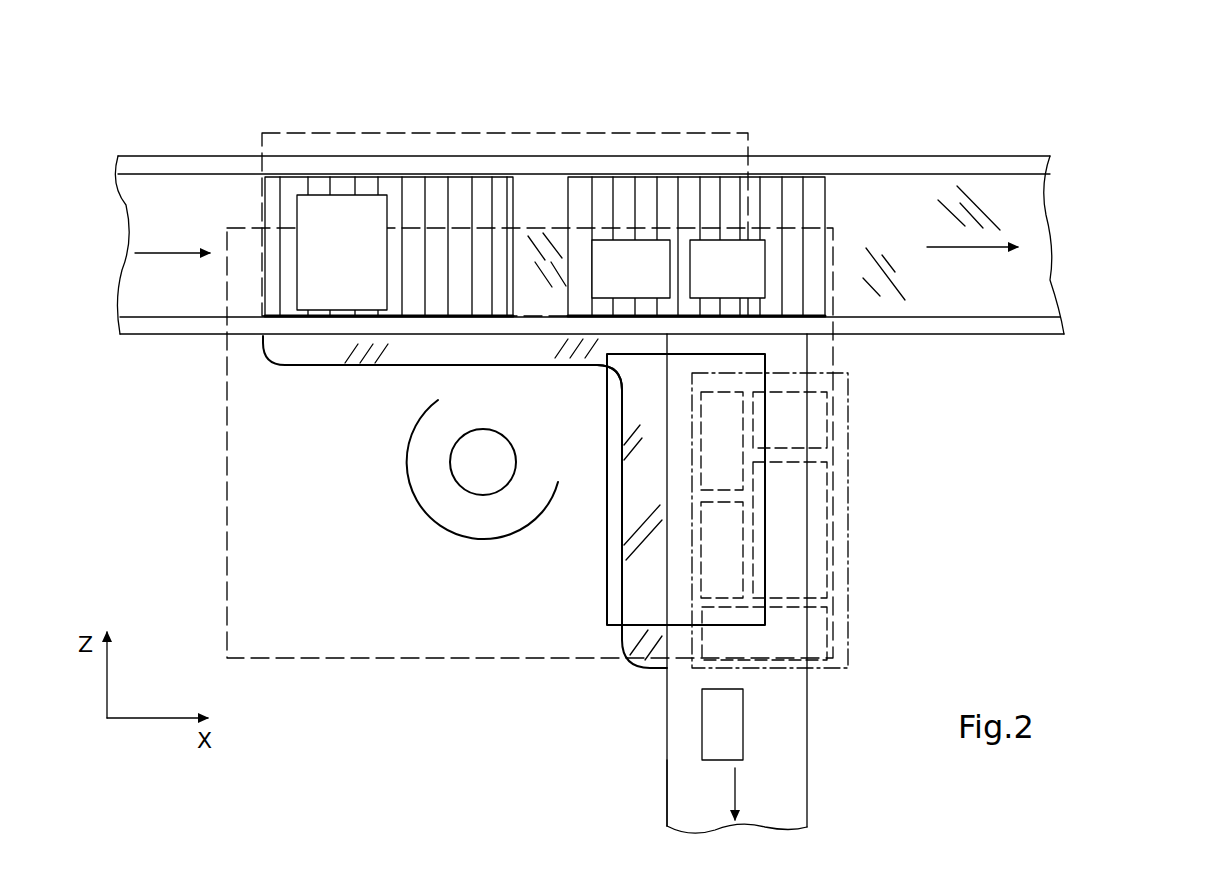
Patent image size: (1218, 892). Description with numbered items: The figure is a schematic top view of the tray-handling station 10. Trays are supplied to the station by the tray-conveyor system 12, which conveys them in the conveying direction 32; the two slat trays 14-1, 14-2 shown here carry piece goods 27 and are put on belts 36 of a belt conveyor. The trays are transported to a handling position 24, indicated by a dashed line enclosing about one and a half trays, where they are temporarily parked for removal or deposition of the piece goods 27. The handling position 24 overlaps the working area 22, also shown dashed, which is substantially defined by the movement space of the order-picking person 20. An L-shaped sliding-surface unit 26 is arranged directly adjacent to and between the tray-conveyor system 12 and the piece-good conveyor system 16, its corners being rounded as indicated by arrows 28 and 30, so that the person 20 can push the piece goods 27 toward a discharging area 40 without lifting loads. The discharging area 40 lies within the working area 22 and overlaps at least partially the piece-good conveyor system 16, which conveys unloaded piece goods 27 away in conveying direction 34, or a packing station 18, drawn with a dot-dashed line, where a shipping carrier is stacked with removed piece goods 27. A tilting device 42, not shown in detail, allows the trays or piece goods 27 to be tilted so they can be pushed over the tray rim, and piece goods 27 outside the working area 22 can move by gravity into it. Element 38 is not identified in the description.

The tray-handling station 10 is at (830, 110).
The tray-conveyor system 12 is at (1082, 242).
The tray 14-1 is at (262, 200).
The tray 14-2 is at (565, 188).
The piece-good conveyor system 16 is at (812, 755).
The packing station 18 is at (852, 392).
The order-picking person 20 is at (500, 545).
The working area 22 is at (305, 660).
The handling position 24 is at (397, 128).
The sliding-surface unit 26 is at (300, 372).
The piece good 27 is at (562, 477).
The arrow indicating rounded corner 28 is at (264, 364).
The arrow indicating rounded corner 30 is at (596, 371).
The conveying direction 32 is at (157, 251).
The conveying direction 34 is at (736, 772).
The belt 36 is at (1006, 155).
The conveyor edge 38 is at (667, 807).
The discharging area 40 is at (603, 590).
The tilting device 42 is at (648, 106).